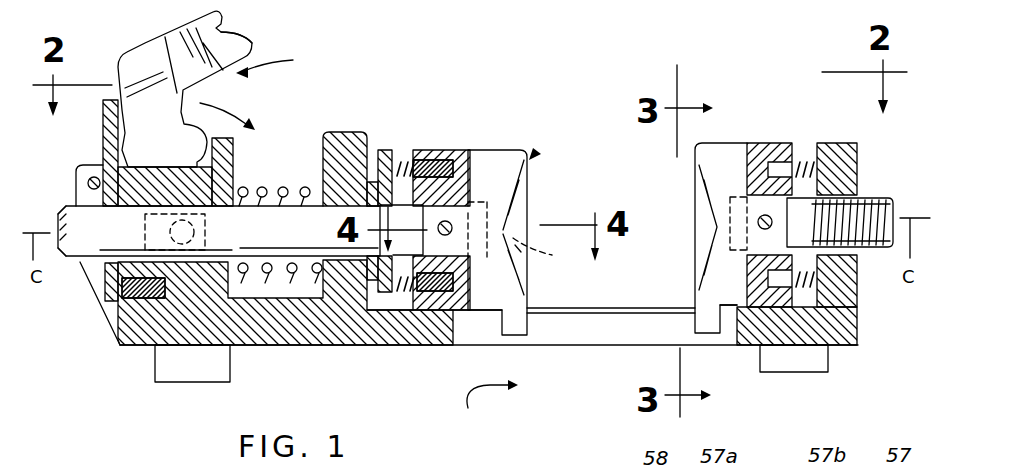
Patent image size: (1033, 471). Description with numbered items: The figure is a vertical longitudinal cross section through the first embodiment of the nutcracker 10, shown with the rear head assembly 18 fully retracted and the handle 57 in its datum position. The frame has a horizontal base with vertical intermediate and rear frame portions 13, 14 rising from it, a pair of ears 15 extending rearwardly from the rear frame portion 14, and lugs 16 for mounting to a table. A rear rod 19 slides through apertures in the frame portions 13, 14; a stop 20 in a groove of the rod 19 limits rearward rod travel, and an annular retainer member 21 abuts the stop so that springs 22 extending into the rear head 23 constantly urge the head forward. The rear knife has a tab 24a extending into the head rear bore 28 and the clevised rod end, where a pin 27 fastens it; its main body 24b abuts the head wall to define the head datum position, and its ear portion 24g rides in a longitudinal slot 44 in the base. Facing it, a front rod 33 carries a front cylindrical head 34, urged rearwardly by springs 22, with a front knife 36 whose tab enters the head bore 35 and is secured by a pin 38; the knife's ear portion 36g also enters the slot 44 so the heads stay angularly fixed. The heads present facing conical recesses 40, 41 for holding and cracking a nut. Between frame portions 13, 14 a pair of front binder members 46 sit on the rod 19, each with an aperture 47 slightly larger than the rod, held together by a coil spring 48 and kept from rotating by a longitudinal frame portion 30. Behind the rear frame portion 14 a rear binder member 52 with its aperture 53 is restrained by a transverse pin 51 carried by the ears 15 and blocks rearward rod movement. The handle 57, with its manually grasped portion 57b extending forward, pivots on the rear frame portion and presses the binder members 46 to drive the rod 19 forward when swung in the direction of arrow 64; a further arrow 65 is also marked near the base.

The nutcracker 10 is at (279, 60).
The intermediate frame portion 13 is at (348, 132).
The rear frame portion 14 is at (157, 305).
The ears 15 is at (110, 312).
The lugs 16 is at (178, 382).
The rear cylindrical head assembly 18 is at (534, 156).
The rear rod 19 is at (80, 232).
The stop 20 is at (372, 268).
The annular retainer member 21 is at (386, 150).
The springs 22 is at (448, 150).
The rear head 23 is at (460, 150).
The tab 24a is at (460, 212).
The rear knife main body 24b is at (500, 160).
The ear portion 24g is at (515, 333).
The pin 27 is at (452, 229).
The head rear bore 28 is at (547, 256).
The longitudinal frame portion 30 is at (283, 290).
The front rod 33 is at (868, 212).
The front cylindrical head 34 is at (803, 314).
The head bore 35 is at (758, 147).
The front knife 36 is at (712, 155).
The ear portion 36g is at (707, 318).
The pin 38 is at (760, 226).
The conical recess 40 is at (520, 250).
The conical recess 41 is at (703, 220).
The longitudinal slot 44 is at (447, 330).
The front binder members 46 is at (233, 165).
The aperture 47 is at (227, 254).
The coil spring 48 is at (302, 185).
The transverse pin 51 is at (86, 180).
The rear binder member 52 is at (107, 100).
The aperture 53 is at (103, 293).
The handle 57 is at (218, 26).
The manually grasped portion 57b is at (238, 52).
The arrow 64 is at (205, 100).
The motion arrow 65 is at (480, 398).